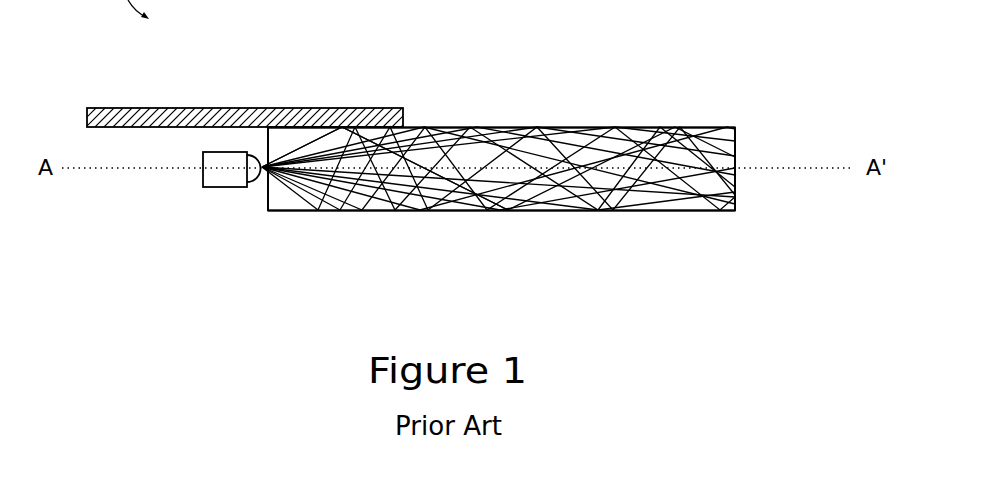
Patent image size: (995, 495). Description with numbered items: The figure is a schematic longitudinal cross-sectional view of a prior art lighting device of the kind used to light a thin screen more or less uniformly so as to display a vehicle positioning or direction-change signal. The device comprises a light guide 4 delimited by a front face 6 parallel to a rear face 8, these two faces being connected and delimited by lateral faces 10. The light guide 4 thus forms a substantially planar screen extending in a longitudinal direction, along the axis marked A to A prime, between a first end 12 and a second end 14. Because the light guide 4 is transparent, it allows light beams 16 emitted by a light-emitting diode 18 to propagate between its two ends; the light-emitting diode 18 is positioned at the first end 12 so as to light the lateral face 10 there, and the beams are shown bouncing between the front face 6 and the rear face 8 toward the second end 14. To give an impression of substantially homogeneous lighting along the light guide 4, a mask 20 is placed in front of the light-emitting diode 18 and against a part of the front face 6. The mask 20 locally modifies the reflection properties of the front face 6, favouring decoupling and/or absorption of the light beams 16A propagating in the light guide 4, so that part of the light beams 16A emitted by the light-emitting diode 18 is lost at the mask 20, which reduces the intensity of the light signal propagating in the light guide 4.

The light guide 4 is at (418, 182).
The front face 6 is at (636, 127).
The rear face 8 is at (631, 211).
The lateral faces 10 is at (737, 153).
The first end 12 is at (243, 200).
The second end 14 is at (750, 200).
The light beams 16 is at (266, 160).
The light beams propagating in the light guide 16A is at (347, 163).
The light-emitting diode 18 is at (227, 170).
The mask 20 is at (177, 111).